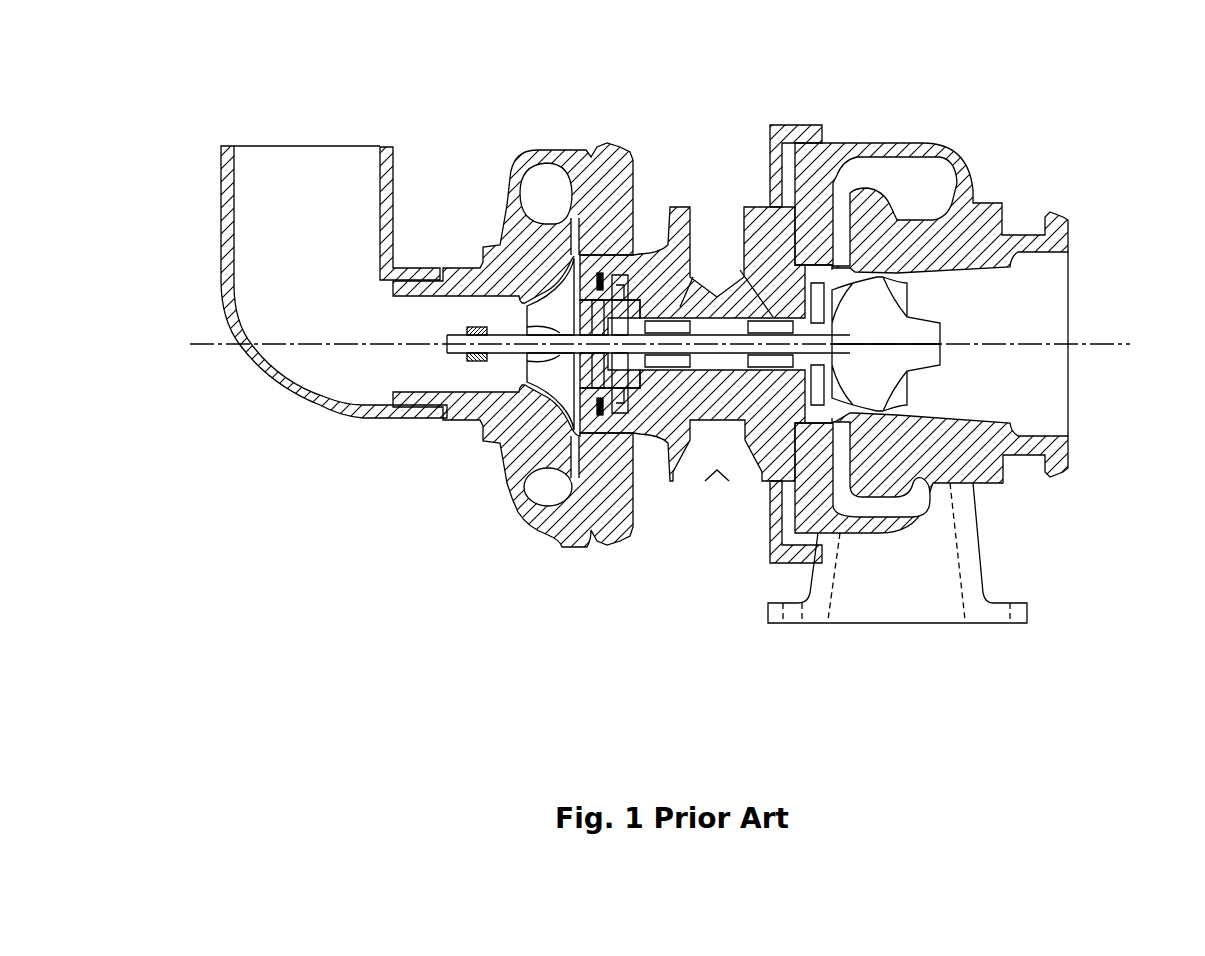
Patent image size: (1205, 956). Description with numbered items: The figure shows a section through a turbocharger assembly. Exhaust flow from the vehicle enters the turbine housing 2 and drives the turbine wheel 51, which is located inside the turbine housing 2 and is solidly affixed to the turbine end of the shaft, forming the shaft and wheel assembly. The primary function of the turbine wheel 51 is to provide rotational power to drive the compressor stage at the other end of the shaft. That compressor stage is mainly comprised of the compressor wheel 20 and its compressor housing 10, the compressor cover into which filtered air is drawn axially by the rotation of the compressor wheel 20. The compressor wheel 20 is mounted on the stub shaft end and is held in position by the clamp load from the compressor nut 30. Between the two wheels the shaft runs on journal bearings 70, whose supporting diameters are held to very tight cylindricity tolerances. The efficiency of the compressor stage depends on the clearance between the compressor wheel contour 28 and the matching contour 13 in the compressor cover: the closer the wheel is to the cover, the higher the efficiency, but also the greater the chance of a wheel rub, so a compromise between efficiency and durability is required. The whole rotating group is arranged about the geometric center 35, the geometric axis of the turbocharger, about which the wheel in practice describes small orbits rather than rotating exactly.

The turbine housing 2 is at (813, 167).
The compressor housing 10 is at (505, 440).
The matching contour 13 is at (568, 380).
The compressor wheel 20 is at (567, 375).
The compressor wheel contour 28 is at (503, 240).
The compressor nut 30 is at (468, 360).
The geometric center 35 is at (1085, 344).
The turbine wheel 51 is at (882, 363).
The journal bearings 70 is at (763, 362).